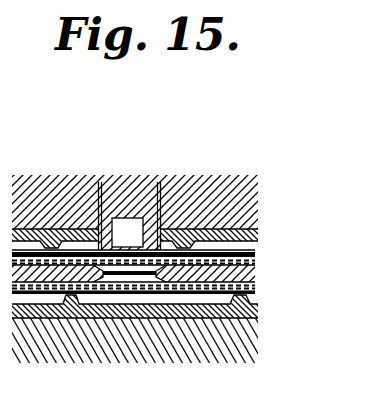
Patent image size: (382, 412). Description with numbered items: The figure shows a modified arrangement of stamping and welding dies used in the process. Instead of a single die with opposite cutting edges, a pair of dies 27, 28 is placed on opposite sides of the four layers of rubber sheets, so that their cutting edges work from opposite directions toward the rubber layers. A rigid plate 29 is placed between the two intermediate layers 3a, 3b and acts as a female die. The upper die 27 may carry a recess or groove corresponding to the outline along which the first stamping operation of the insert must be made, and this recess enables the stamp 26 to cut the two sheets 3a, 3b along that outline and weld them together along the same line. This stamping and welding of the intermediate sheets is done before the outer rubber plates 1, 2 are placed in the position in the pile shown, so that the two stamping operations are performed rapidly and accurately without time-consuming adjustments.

The rubber plate 1 is at (255, 293).
The rubber plate 2 is at (257, 253).
The intermediate layer 3a is at (253, 285).
The intermediate layer 3b is at (257, 262).
The stamp 26 is at (160, 200).
The upper die 27 is at (184, 230).
The lower die 28 is at (108, 318).
The rigid plate 29 is at (210, 278).